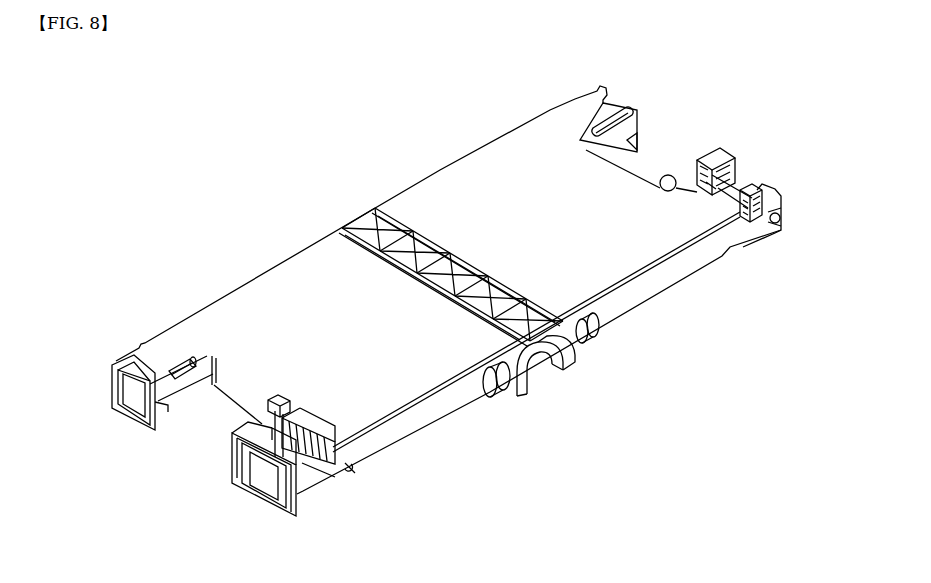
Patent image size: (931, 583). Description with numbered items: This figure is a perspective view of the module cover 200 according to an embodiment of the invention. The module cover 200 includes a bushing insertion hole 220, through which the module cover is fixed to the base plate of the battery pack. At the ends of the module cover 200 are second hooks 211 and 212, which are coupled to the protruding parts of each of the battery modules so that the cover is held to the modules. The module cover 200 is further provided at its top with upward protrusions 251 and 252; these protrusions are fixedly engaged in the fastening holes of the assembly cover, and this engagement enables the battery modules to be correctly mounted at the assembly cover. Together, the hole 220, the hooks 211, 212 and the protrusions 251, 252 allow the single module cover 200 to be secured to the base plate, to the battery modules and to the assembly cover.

The module cover 200 is at (206, 153).
The second hook 211 is at (116, 424).
The second hook 212 is at (250, 506).
The bushing insertion hole 220 is at (532, 378).
The upward protrusion 251 is at (497, 373).
The upward protrusion 252 is at (592, 332).